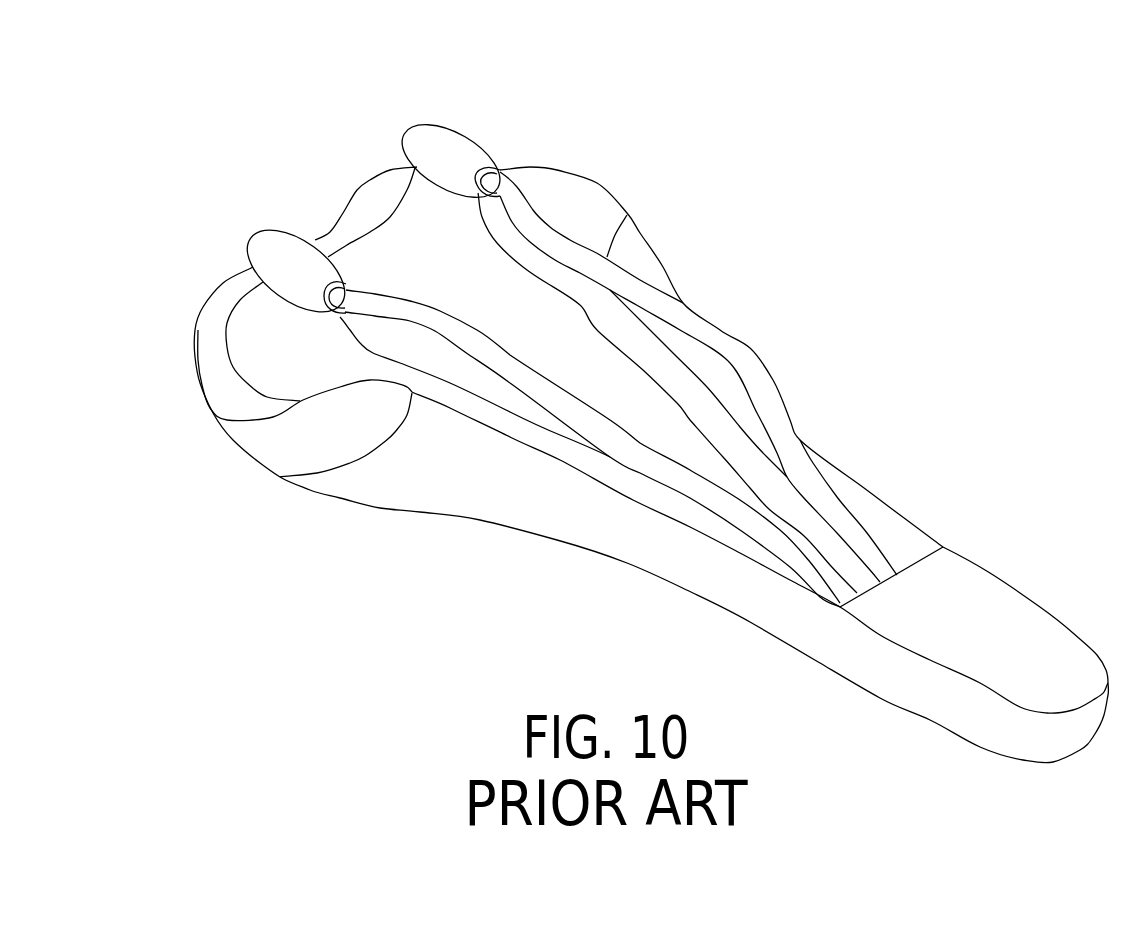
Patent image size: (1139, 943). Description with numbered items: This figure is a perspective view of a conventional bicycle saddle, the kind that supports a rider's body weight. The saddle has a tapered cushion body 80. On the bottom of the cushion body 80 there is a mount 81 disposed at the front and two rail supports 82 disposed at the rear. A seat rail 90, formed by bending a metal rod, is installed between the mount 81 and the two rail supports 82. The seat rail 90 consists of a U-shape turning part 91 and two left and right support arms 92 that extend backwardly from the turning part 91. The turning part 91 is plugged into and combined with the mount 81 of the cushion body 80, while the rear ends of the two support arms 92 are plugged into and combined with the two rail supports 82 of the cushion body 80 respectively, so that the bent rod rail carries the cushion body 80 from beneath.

The cushion body 80 is at (557, 540).
The mount 81 is at (982, 600).
The rail supports 82 is at (287, 248).
The seat rail 90 is at (750, 348).
The turning part 91 is at (877, 567).
The support arms 92 is at (543, 390).